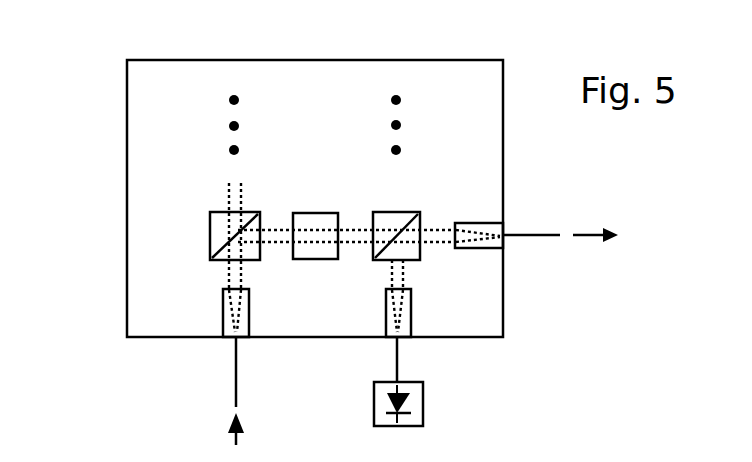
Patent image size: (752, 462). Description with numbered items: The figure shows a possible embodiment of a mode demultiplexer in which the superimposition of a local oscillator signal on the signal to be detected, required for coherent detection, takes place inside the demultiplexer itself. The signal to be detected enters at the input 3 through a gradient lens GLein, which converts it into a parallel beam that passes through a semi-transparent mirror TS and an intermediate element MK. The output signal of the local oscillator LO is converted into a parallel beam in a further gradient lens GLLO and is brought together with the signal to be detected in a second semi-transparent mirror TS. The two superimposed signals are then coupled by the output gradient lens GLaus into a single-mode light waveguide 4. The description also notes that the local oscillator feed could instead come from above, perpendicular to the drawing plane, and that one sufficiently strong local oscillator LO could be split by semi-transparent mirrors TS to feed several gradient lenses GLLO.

The semi-transparent mirror TS is at (218, 220).
The modulator / compensation element MK is at (315, 220).
The gradient lens GLaus is at (484, 225).
The single-mode light waveguide 4 is at (525, 233).
The input fibre coupler (Glasfaser ein) GLein is at (228, 320).
The input signal beam 3 is at (232, 370).
The gradient lens GLLO is at (397, 323).
The local oscillator LO is at (421, 405).